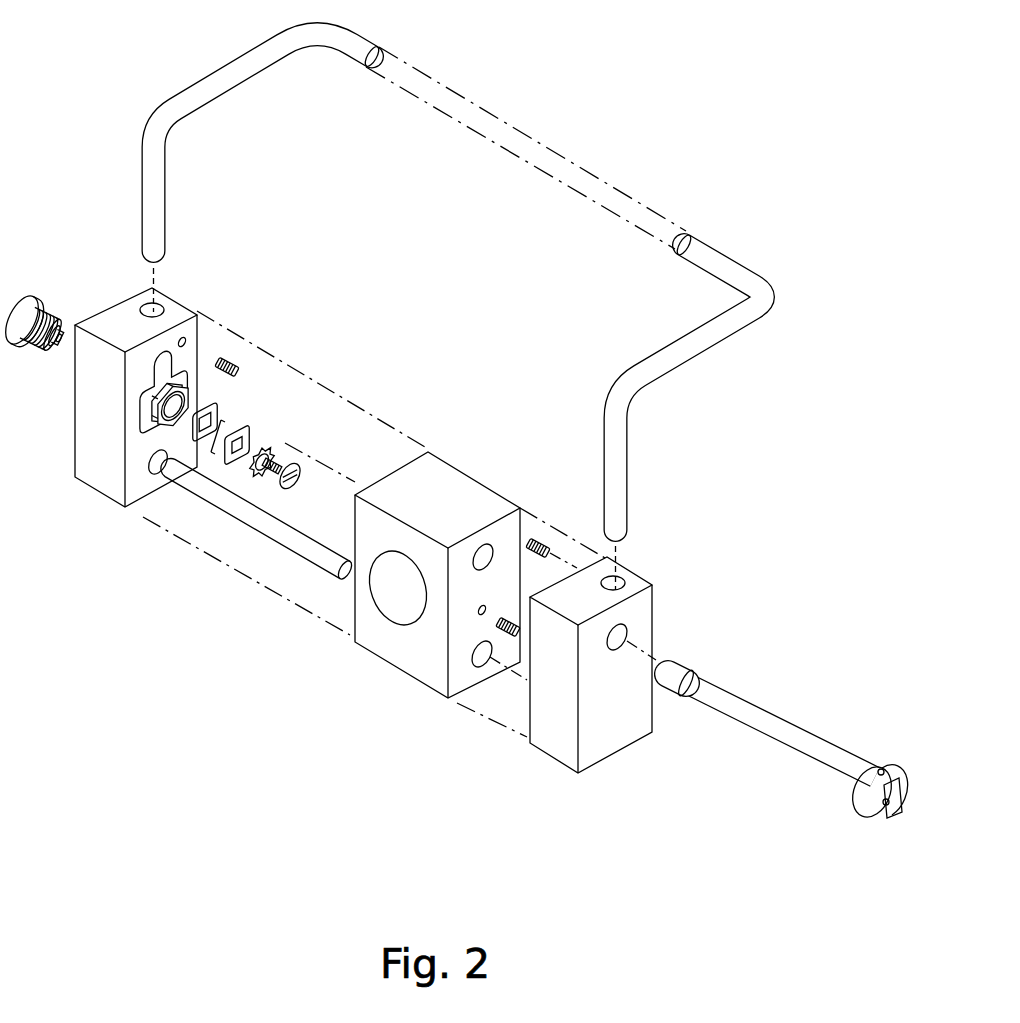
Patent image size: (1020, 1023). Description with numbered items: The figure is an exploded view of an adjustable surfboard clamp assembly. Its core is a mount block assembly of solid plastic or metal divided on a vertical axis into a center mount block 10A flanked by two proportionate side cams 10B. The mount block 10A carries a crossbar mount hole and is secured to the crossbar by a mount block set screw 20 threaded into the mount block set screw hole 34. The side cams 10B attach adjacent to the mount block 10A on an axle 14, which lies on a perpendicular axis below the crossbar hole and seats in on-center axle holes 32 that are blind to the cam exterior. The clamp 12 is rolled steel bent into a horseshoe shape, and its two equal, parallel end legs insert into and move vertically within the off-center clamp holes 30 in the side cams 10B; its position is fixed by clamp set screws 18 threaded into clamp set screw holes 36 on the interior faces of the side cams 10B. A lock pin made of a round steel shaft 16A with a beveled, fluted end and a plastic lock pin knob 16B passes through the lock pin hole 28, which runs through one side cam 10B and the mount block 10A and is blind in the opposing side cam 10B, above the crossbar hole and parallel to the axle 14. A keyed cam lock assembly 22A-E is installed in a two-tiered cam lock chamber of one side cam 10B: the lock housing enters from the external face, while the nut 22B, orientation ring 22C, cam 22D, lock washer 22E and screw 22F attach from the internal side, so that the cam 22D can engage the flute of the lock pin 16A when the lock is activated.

The clamp 12 is at (459, 312).
The mount block 10A is at (399, 591).
The side cam 10B is at (363, 537).
The axle 14 is at (257, 579).
The lock pin 16A is at (736, 759).
The lock pin knob 16B is at (868, 732).
The clamp set screw 18 is at (407, 478).
The mount block set screw 20 is at (409, 758).
The cam lock assembly 22A-E is at (50, 191).
The nut 22B is at (120, 449).
The orientation ring 22C is at (136, 495).
The cam 22D is at (169, 514).
The lock washer 22E is at (191, 538).
The screw 22F is at (214, 557).
The lock pin hole 28 is at (393, 463).
The clamp hole 30 is at (393, 418).
The axle hole 32 is at (279, 619).
The mount block set screw hole 34 is at (413, 684).
The clamp set screw hole 36 is at (222, 301).